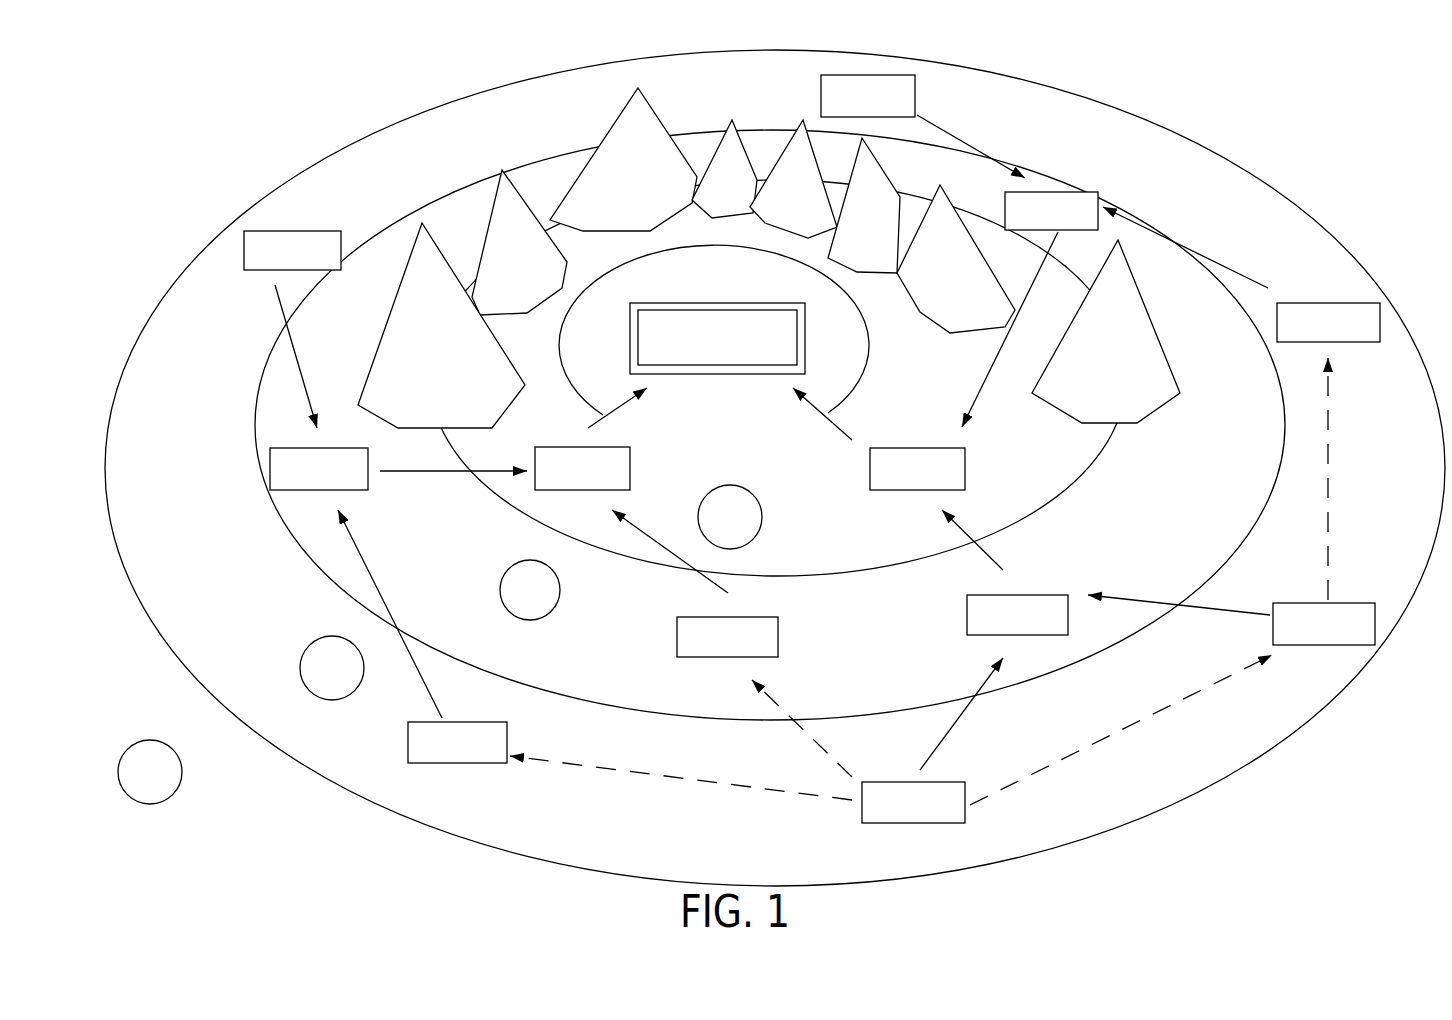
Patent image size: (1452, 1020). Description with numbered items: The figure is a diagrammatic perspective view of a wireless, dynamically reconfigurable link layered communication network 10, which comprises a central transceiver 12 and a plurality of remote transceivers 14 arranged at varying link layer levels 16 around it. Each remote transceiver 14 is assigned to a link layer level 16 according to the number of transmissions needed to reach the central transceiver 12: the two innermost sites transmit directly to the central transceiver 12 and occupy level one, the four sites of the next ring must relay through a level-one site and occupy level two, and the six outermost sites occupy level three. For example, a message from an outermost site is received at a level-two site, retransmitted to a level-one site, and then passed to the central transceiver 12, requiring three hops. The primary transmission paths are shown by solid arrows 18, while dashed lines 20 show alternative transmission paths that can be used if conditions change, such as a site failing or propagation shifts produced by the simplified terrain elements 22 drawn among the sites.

The link layered communication network 10 is at (1284, 165).
The central transceiver 12 is at (805, 337).
The remote transceiver 14 is at (267, 231).
The link layer level 16 is at (762, 517).
The primary transmission path 18 is at (955, 723).
The alternative transmission path 20 is at (664, 777).
The terrain element 22 is at (640, 175).